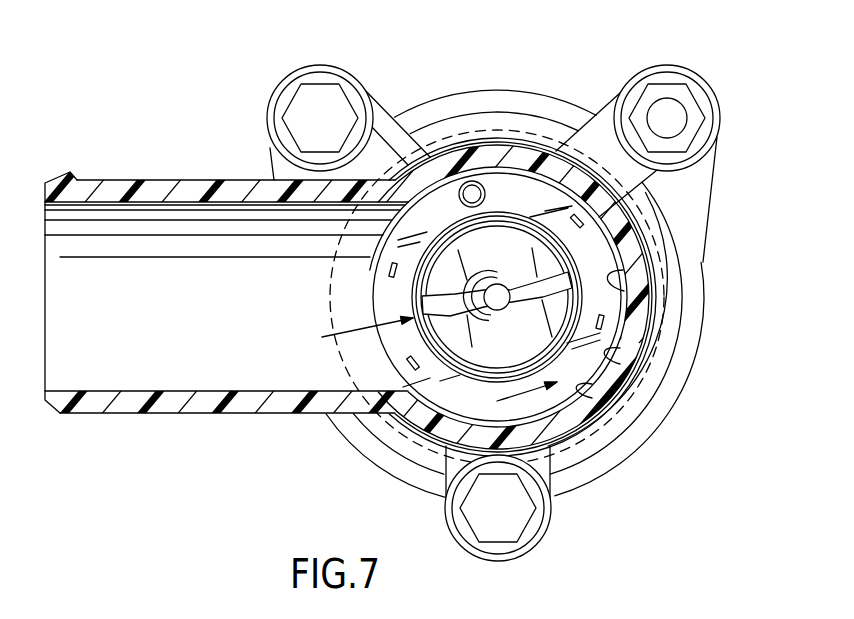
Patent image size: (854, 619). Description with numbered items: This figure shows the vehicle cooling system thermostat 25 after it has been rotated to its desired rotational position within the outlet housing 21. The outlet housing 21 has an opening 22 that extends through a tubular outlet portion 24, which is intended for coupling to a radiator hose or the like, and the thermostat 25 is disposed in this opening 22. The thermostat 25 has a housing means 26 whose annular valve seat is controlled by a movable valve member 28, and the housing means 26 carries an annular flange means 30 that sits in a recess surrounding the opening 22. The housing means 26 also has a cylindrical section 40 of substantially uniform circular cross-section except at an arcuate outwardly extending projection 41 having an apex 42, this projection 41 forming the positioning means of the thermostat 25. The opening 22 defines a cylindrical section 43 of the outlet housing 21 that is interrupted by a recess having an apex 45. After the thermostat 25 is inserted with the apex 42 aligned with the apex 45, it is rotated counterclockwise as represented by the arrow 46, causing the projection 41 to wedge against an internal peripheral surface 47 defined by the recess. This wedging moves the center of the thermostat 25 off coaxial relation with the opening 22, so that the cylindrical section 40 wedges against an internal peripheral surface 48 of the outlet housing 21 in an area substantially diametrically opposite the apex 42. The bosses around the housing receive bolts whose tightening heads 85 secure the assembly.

The outlet housing 21 is at (708, 252).
The opening 22 is at (612, 348).
The tubular outlet portion 24 is at (185, 183).
The thermostat 25 is at (348, 335).
The housing means 26 is at (413, 290).
The movable valve member 28 is at (522, 262).
The annular flange means 30 is at (347, 367).
The cylindrical section 40 is at (625, 326).
The outwardly extending projection 41 is at (534, 153).
The apex 42 is at (473, 150).
The cylindrical section 43 is at (612, 287).
The apex 45 is at (517, 150).
The arrow 46 is at (532, 396).
The internal peripheral surface 47 is at (450, 173).
The internal peripheral surface 48 is at (578, 389).
The tightening head 85 is at (317, 93).